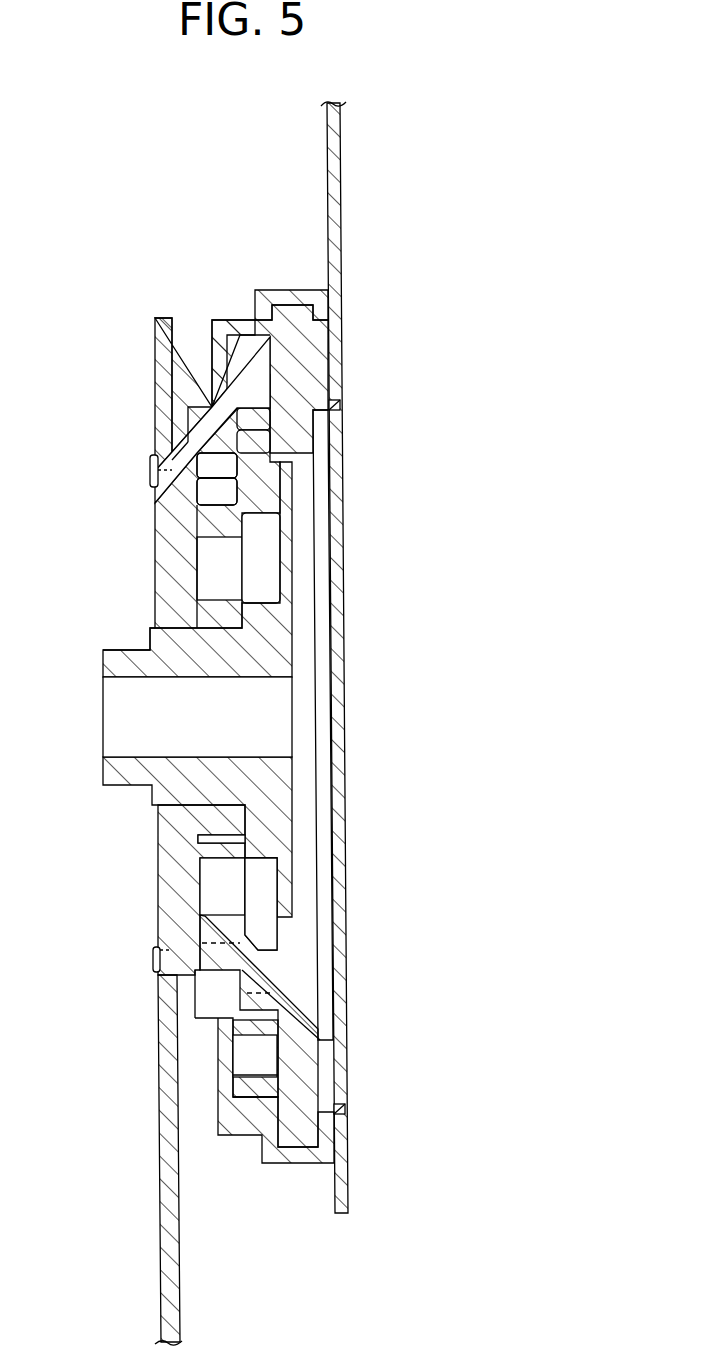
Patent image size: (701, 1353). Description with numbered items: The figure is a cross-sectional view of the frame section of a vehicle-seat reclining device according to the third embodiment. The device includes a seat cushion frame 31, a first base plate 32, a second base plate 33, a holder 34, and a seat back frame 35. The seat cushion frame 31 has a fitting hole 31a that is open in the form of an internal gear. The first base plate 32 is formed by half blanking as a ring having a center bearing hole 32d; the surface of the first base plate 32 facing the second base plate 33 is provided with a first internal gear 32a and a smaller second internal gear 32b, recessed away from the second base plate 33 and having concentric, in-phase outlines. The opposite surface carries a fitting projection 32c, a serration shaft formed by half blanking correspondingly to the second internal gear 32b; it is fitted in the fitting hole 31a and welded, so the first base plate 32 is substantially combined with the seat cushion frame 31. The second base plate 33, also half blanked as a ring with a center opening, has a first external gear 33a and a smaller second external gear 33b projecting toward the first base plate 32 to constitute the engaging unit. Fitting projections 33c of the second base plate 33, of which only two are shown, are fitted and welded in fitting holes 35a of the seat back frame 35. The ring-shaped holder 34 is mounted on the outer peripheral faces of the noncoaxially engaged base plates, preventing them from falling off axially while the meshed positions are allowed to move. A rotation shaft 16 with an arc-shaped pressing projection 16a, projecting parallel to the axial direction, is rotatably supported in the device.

The rotation shaft 16 is at (280, 770).
The pressing projection 16a is at (207, 845).
The seat cushion frame 31 is at (160, 1130).
The fitting hole 31a is at (158, 958).
The first base plate 32 is at (165, 900).
The first internal gear 32a is at (257, 417).
The second internal gear 32b is at (218, 465).
The fitting projection 32c is at (162, 470).
The center bearing hole 32d is at (155, 628).
The second base plate 33 is at (304, 1022).
The first external gear 33a is at (258, 1002).
The second external gear 33b is at (220, 960).
The fitting projections 33c is at (342, 1085).
The holder 34 is at (286, 299).
The seat back frame 35 is at (341, 682).
The fitting holes 35a is at (340, 406).